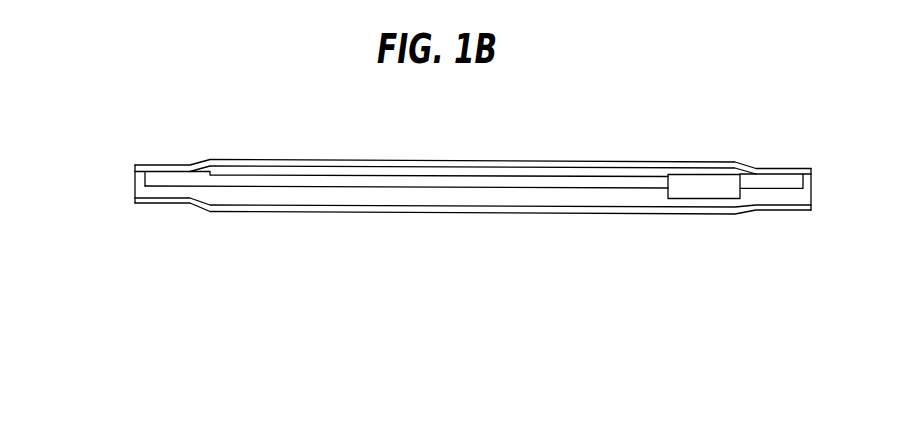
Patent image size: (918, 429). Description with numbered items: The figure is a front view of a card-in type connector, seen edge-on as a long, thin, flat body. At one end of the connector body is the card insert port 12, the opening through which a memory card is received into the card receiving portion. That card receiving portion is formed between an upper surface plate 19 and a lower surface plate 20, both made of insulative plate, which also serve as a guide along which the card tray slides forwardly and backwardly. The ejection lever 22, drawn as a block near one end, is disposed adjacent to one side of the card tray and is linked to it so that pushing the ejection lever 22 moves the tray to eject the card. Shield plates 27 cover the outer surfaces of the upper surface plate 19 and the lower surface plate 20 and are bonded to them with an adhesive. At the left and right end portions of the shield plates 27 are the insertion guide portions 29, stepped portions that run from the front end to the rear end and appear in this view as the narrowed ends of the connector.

The card insert port 12 is at (578, 178).
The upper surface plate 19 is at (342, 168).
The lower surface plate 20 is at (343, 199).
The ejection lever 22 is at (702, 182).
The shield plates 27 is at (472, 162).
The insertion guide portions 29 is at (158, 165).